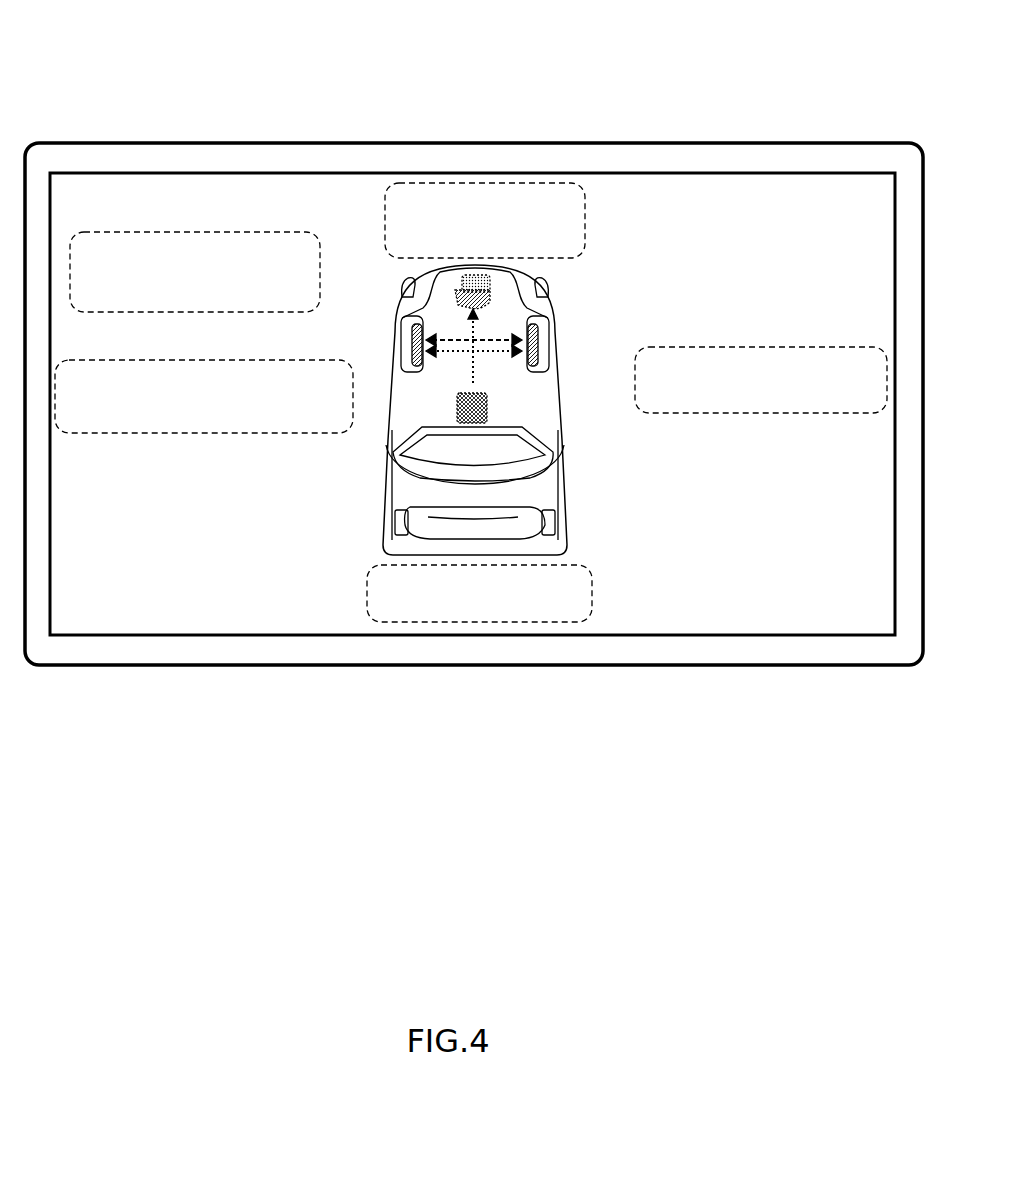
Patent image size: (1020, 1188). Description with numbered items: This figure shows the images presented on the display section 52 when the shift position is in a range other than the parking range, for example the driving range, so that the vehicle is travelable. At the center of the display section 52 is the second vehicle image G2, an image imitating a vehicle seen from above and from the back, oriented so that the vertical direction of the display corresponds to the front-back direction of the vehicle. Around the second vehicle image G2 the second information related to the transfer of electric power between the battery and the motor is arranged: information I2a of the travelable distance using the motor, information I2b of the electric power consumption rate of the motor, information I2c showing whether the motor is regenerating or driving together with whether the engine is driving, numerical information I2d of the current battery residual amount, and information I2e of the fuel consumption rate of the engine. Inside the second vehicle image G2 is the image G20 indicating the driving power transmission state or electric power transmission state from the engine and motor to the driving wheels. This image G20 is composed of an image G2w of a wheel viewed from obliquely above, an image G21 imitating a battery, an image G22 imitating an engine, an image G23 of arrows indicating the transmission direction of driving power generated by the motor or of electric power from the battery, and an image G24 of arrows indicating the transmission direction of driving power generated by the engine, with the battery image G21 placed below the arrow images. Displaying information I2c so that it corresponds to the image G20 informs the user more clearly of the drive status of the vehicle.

The display section 52 is at (471, 141).
The information of travelable distance I2a is at (793, 345).
The information of electric power consumption rate I2b is at (198, 230).
The information of regenerating state or driving state I2c is at (560, 183).
The numerical information of current battery residual amount I2d is at (565, 624).
The information of fuel consumption rate I2e is at (83, 363).
The second vehicle image G2 is at (385, 308).
The image of a wheel G2w is at (405, 341).
The image indicating driving power transmission state or electric power transmission G20 is at (537, 412).
The image imitating a battery G21 is at (458, 412).
The image imitating an engine G22 is at (481, 288).
The image of arrows indicating transmission direction of driving power generated by G23 is at (452, 360).
The image of arrows indicating transmission direction of driving power generated by G24 is at (452, 338).